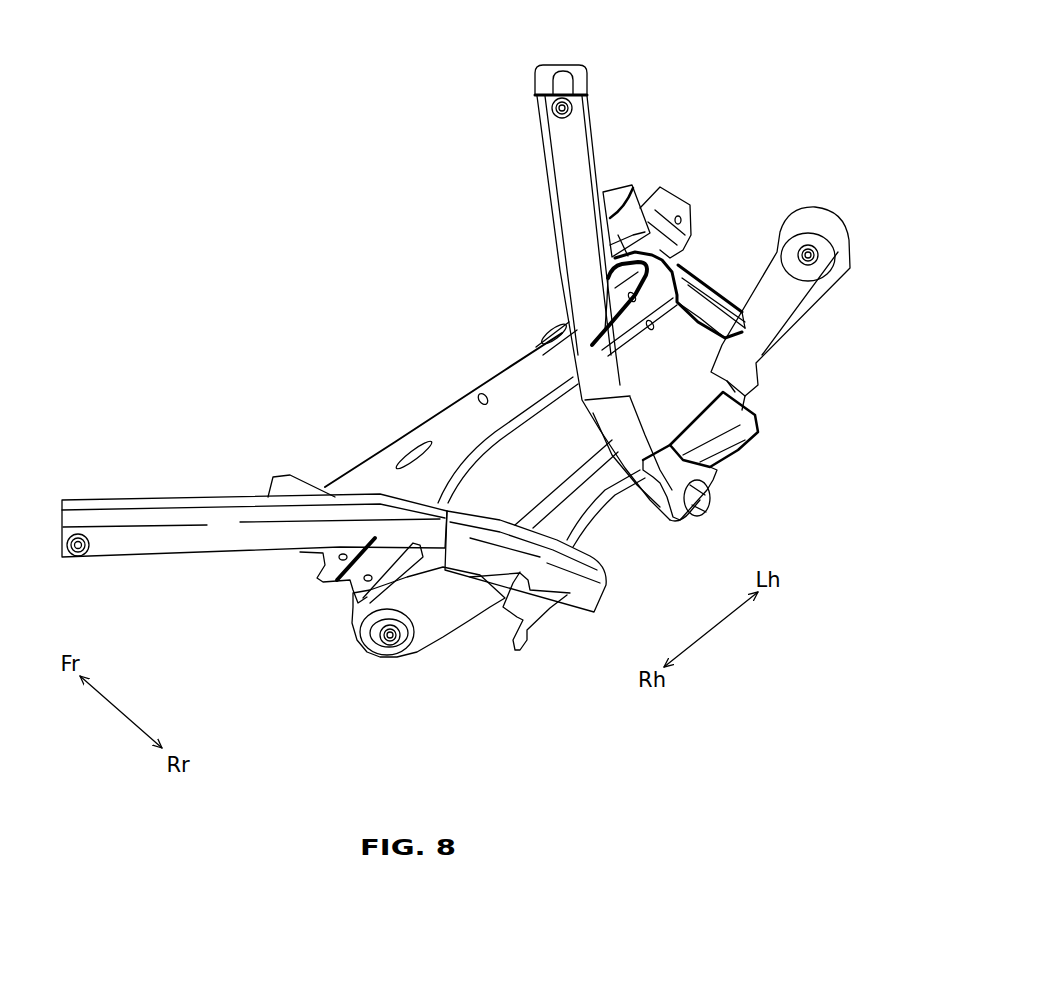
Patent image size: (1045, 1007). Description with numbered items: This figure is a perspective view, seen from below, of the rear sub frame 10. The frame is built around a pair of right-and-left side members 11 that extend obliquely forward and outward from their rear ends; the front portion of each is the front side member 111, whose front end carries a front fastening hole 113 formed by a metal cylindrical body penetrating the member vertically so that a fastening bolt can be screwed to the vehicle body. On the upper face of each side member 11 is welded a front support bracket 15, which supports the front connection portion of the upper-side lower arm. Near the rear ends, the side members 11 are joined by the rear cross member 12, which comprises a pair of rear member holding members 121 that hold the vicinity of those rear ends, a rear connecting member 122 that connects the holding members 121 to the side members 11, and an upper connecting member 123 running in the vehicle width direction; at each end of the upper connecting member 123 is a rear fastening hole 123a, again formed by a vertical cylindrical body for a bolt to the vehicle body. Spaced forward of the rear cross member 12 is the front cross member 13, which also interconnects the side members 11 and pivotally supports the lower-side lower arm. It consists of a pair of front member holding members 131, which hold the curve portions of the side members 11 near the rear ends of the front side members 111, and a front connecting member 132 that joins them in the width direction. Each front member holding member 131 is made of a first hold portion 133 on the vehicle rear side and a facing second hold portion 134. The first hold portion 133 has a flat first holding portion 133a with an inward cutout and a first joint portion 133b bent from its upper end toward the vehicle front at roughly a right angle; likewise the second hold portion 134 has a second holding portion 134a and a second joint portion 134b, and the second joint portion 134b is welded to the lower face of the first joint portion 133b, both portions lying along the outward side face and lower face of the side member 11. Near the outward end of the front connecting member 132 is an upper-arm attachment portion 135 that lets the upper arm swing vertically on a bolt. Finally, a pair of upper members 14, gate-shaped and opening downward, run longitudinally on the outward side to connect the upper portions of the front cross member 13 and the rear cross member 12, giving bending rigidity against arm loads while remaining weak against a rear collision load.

The rear sub frame 10 is at (90, 92).
The side member 11 is at (545, 205).
The front side member 111 is at (553, 137).
The front fastening hole 113 is at (577, 117).
The rear cross member 12 is at (807, 314).
The rear member holding member 121 is at (687, 487).
The rear connecting member 122 is at (747, 388).
The upper connecting member 123 is at (780, 343).
The rear fastening hole 123a is at (833, 230).
The front cross member 13 is at (415, 425).
The front member holding member 131 is at (500, 406).
The front connecting member 132 is at (493, 423).
The first hold portion 133 is at (798, 175).
The first holding portion 133a is at (700, 337).
The first joint portion 133b is at (697, 327).
The second hold portion 134 is at (482, 264).
The second holding portion 134a is at (600, 352).
The second joint portion 134b is at (605, 296).
The upper-arm attachment portion 135 is at (657, 187).
The upper member 14 is at (700, 336).
The front support bracket 15 is at (618, 182).